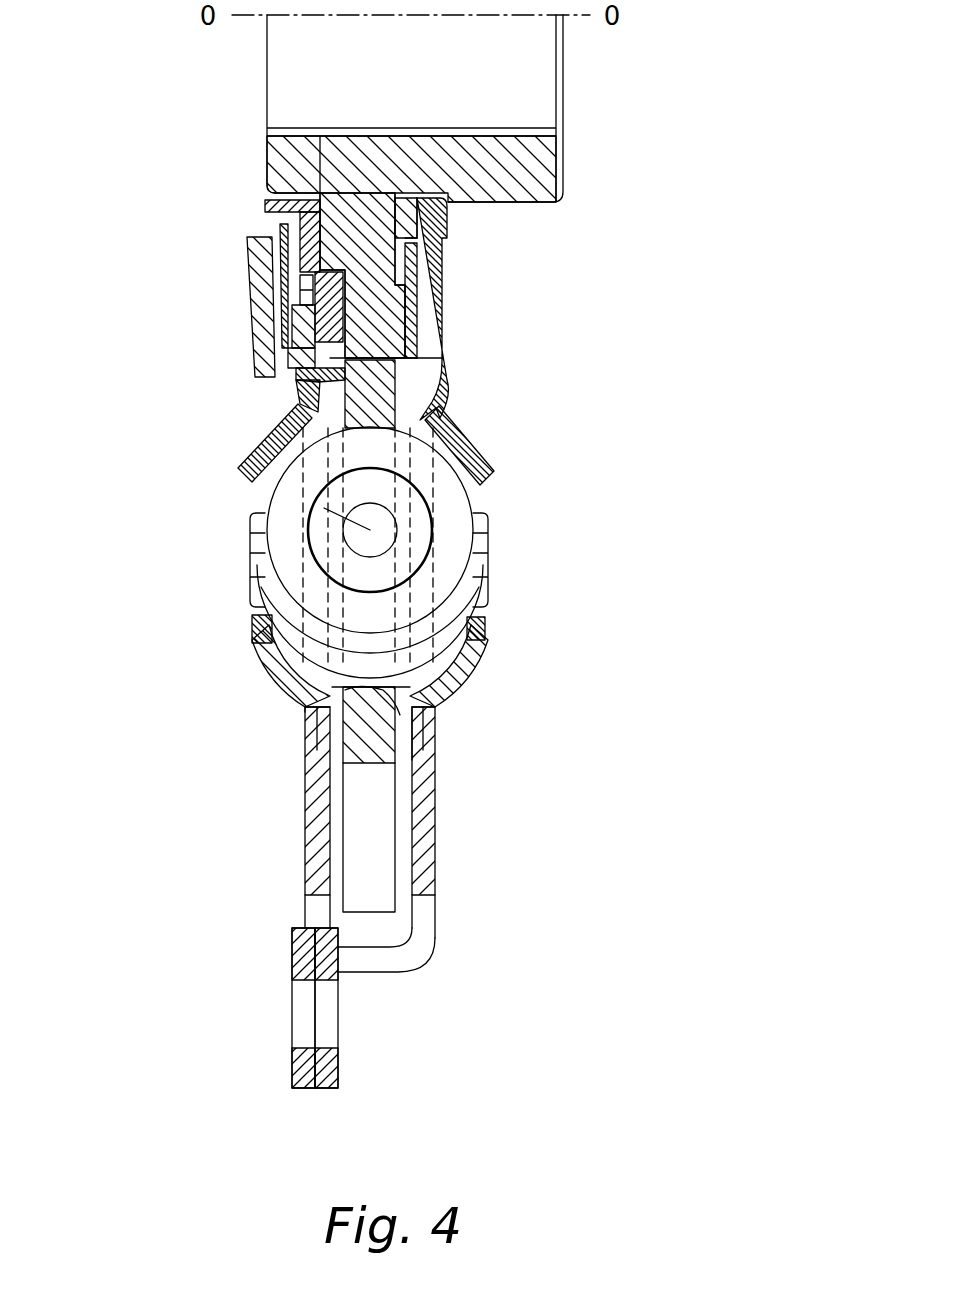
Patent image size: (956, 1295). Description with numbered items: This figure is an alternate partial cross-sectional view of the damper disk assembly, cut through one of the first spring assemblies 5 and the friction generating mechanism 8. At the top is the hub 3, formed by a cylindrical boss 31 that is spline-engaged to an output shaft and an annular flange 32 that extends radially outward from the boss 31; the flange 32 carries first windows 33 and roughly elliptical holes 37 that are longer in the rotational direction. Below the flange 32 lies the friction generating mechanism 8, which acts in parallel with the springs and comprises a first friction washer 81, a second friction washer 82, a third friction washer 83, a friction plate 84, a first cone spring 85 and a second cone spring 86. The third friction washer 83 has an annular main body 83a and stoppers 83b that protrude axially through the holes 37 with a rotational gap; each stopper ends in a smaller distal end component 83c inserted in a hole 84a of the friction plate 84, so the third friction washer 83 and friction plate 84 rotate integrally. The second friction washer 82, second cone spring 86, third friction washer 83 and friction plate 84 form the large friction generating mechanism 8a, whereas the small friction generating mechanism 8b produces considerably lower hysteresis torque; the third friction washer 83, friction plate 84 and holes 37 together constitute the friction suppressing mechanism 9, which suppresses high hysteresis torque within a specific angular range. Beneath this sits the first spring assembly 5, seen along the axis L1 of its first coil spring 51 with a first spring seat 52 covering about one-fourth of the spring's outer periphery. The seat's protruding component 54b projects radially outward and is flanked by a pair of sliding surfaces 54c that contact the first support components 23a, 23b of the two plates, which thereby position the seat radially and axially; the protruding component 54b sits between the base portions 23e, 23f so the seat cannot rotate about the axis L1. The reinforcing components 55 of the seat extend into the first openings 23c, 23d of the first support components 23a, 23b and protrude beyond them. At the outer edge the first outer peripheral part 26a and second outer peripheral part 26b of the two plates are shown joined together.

The hub 3 is at (573, 206).
The boss 31 is at (545, 165).
The holes 37 is at (410, 292).
The flange 32 is at (395, 402).
The friction generating mechanism 8 is at (455, 376).
The large friction generating mechanism 8a is at (270, 303).
The small friction generating mechanism 8b is at (232, 200).
The first friction washer 81 is at (300, 212).
The second friction washer 82 is at (300, 372).
The third friction washer 83 is at (428, 311).
The main body 83a is at (395, 262).
The stoppers 83b is at (458, 360).
The distal end component 83c is at (300, 286).
The friction plate 84 is at (302, 398).
The hole 84a is at (328, 336).
The first cone spring 85 is at (262, 236).
The second cone spring 86 is at (294, 340).
The friction suppressing mechanism 9 is at (258, 420).
The first spring assembly 5 is at (512, 600).
The first coil spring 51 is at (452, 506).
The axis L1 is at (345, 520).
The first spring seats 52 is at (260, 607).
The reinforcing components 55 is at (260, 552).
The first support components 23a is at (306, 700).
The first support components 23b is at (442, 700).
The first openings 23c is at (268, 642).
The first openings 23d is at (470, 642).
The base portion 23e is at (302, 708).
The base portion 23f is at (428, 716).
The first windows 33 is at (405, 712).
The protruding components 54b is at (357, 700).
The sliding surfaces 54c is at (305, 702).
The first outer peripheral part 26a is at (300, 1068).
The second outer peripheral part 26b is at (330, 1062).